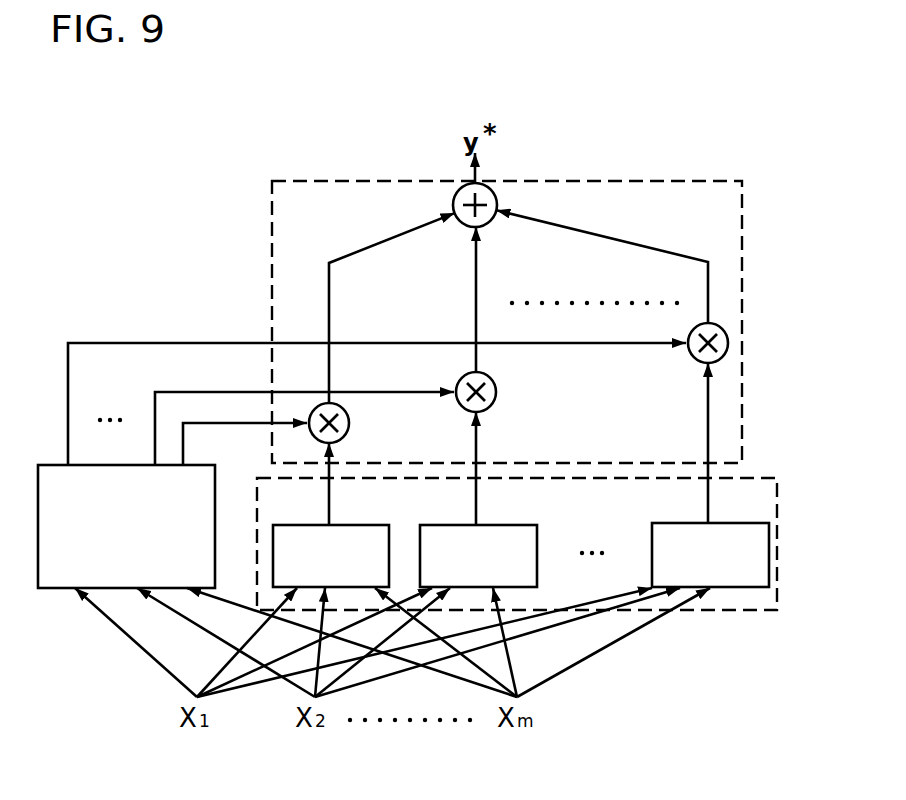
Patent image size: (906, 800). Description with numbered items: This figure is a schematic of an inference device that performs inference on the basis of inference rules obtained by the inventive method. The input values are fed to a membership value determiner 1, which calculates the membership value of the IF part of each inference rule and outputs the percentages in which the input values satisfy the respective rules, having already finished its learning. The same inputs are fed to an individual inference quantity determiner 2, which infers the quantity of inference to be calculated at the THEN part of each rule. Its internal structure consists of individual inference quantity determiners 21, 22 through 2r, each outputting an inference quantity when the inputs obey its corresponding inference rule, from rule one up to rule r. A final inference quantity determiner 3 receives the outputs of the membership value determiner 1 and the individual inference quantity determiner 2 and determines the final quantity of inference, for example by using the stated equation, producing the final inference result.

The membership value determiner 1 is at (52, 588).
The individual inference quantity determiner 2 is at (538, 629).
The final inference quantity determiner 3 is at (270, 192).
The individual inference quantity determiner 21 is at (365, 523).
The individual inference quantity determiner 22 is at (503, 523).
The individual inference quantity determiner 2r is at (720, 522).